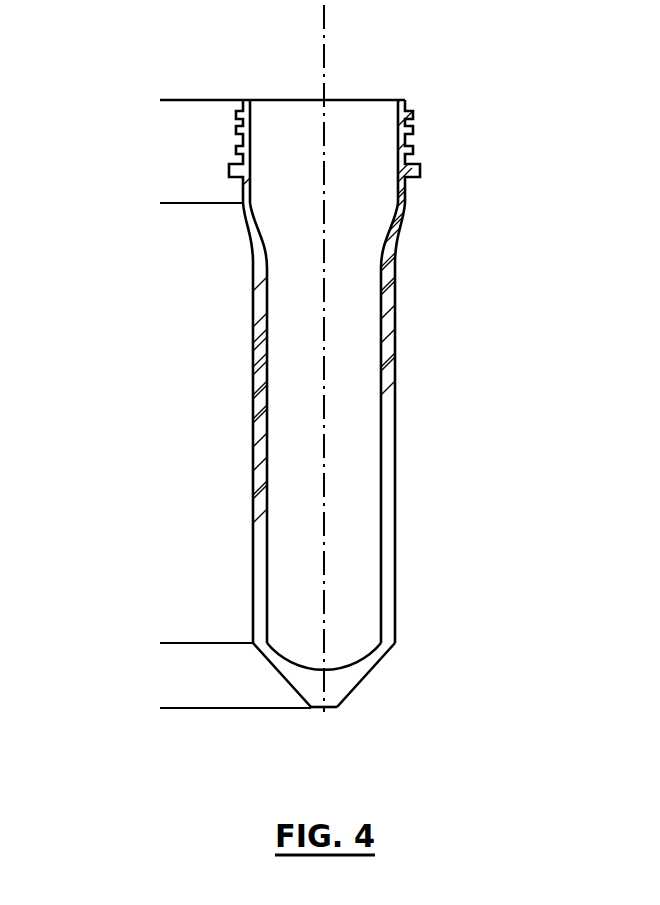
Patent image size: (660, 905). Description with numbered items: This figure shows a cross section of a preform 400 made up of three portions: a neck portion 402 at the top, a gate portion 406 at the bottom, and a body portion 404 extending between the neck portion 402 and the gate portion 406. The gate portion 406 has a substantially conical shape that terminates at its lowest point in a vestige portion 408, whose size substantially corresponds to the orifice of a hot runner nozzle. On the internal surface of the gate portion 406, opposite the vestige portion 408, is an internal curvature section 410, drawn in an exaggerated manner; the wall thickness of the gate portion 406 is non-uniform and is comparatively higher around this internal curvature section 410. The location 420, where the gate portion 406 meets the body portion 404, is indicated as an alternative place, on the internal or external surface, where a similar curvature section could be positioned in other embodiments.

The preform 400 is at (318, 415).
The neck portion 402 is at (173, 100).
The body portion 404 is at (173, 643).
The gate portion 406 is at (280, 705).
The vestige portion 408 is at (333, 708).
The internal curvature section 410 is at (355, 680).
The location where the gate portion meets the body portion 420 is at (397, 643).